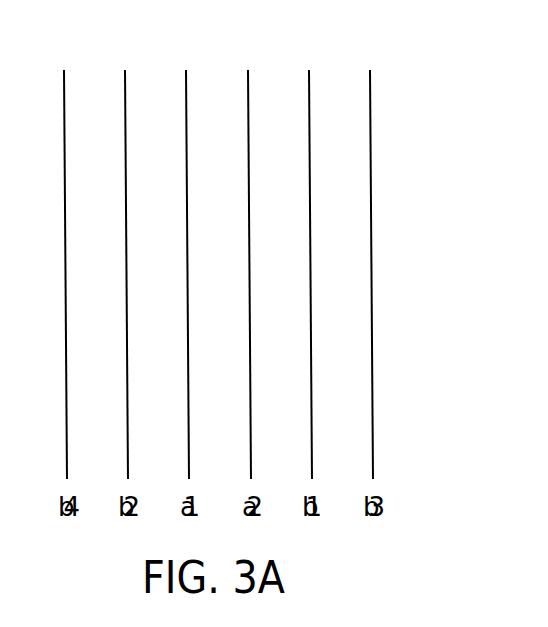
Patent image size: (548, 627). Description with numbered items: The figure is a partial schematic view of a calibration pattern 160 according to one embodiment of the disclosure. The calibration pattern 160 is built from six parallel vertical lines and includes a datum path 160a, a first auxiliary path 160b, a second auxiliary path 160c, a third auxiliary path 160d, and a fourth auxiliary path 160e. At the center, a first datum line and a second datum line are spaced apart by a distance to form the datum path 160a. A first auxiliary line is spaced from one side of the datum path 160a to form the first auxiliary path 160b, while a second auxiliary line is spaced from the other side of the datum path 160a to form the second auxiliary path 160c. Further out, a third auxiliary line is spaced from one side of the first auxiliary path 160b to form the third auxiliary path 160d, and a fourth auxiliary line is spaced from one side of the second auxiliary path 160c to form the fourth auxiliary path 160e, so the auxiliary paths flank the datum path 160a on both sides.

The calibration pattern 160 is at (466, 545).
The fourth auxiliary path 160e is at (96, 82).
The second auxiliary path 160c is at (157, 76).
The datum path 160a is at (218, 78).
The first auxiliary path 160b is at (283, 76).
The third auxiliary path 160d is at (347, 80).